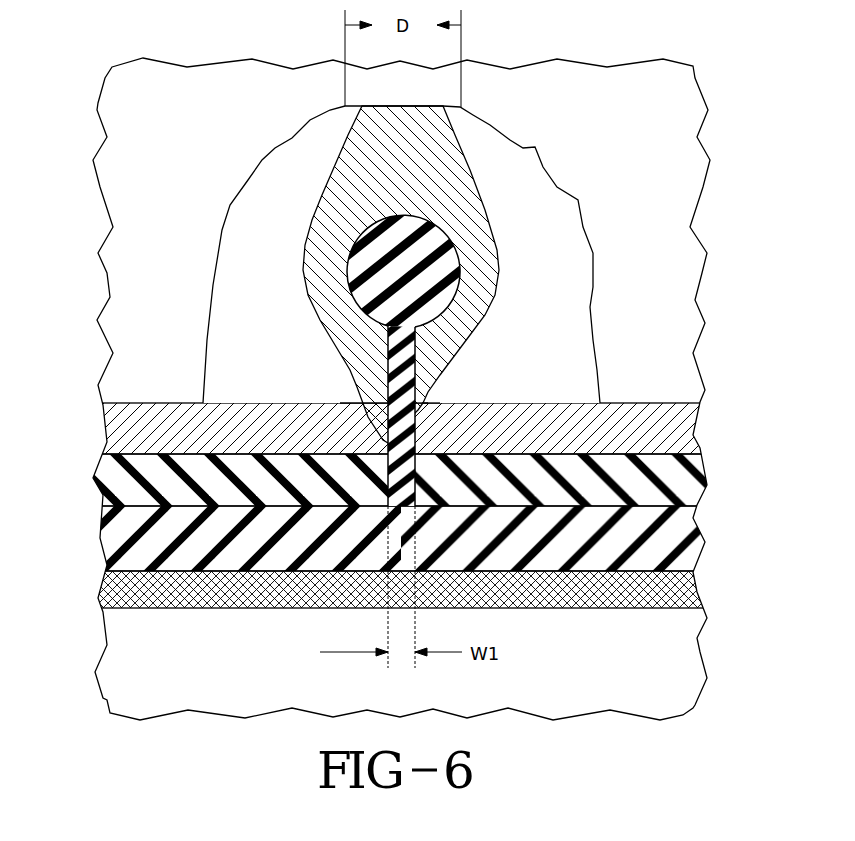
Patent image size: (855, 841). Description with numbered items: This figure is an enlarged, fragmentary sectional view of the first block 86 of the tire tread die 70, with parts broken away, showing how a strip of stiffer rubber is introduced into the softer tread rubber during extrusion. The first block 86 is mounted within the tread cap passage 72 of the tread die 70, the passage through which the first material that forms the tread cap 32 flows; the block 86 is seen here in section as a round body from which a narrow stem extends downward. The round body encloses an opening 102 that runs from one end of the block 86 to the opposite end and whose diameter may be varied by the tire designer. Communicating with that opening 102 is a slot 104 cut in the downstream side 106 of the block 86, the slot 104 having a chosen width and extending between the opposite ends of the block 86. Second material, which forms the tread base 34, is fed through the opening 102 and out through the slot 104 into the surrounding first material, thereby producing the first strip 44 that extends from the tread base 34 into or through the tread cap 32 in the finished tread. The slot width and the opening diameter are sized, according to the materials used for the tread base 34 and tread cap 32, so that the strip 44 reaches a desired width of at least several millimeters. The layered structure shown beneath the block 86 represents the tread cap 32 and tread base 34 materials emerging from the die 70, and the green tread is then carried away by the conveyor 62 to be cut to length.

The tread cap 32 is at (683, 490).
The tread base 34 is at (125, 536).
The first strip 44 is at (400, 437).
The conveyor 62 is at (653, 583).
The tire tread die 70 is at (148, 437).
The tread cap passage 72 is at (510, 185).
The first block 86 is at (468, 289).
The opening 102 is at (387, 265).
The slot 104 is at (397, 367).
The downstream side 106 is at (423, 413).